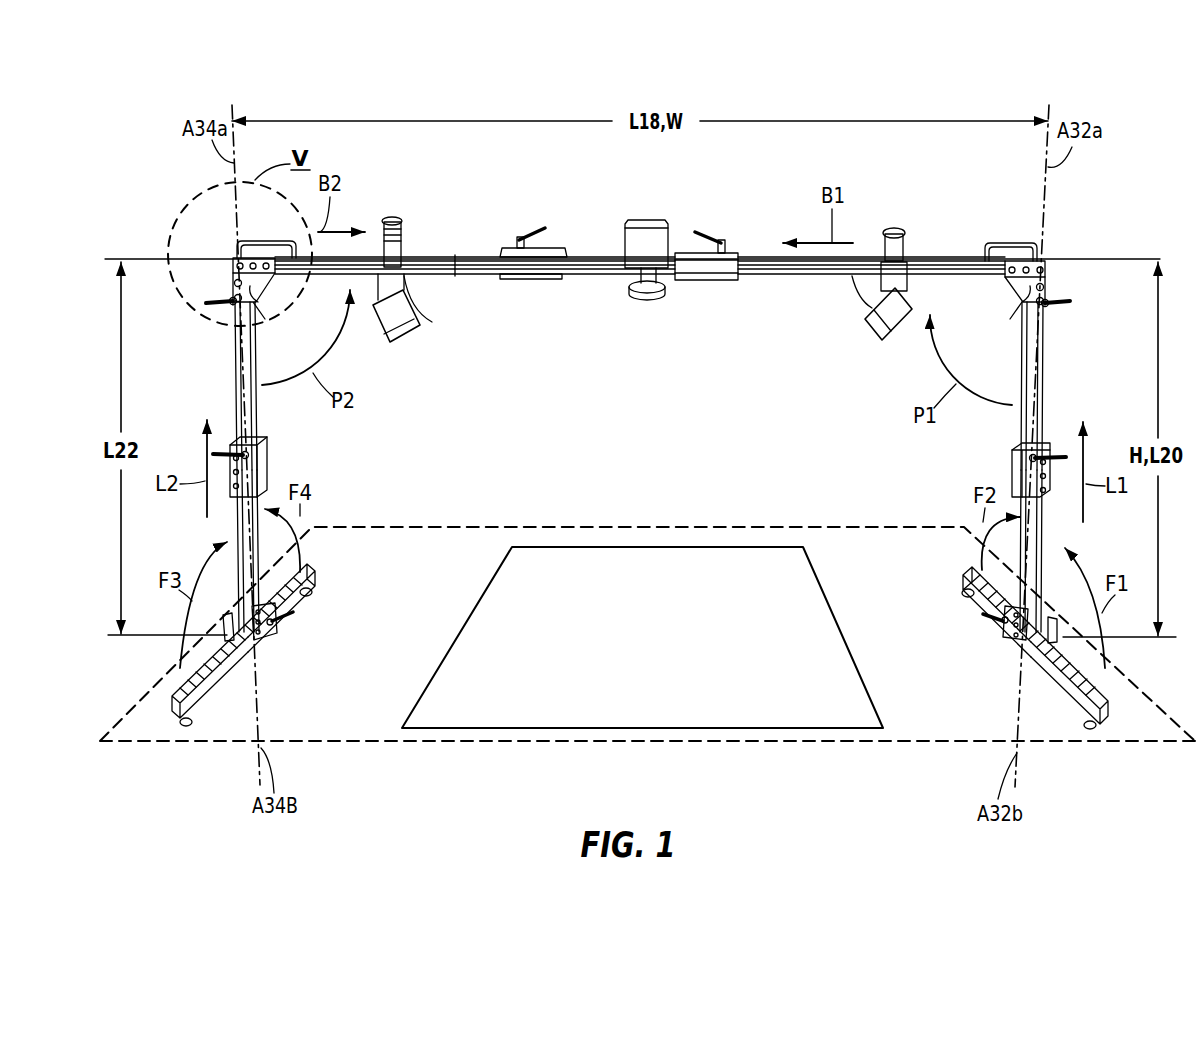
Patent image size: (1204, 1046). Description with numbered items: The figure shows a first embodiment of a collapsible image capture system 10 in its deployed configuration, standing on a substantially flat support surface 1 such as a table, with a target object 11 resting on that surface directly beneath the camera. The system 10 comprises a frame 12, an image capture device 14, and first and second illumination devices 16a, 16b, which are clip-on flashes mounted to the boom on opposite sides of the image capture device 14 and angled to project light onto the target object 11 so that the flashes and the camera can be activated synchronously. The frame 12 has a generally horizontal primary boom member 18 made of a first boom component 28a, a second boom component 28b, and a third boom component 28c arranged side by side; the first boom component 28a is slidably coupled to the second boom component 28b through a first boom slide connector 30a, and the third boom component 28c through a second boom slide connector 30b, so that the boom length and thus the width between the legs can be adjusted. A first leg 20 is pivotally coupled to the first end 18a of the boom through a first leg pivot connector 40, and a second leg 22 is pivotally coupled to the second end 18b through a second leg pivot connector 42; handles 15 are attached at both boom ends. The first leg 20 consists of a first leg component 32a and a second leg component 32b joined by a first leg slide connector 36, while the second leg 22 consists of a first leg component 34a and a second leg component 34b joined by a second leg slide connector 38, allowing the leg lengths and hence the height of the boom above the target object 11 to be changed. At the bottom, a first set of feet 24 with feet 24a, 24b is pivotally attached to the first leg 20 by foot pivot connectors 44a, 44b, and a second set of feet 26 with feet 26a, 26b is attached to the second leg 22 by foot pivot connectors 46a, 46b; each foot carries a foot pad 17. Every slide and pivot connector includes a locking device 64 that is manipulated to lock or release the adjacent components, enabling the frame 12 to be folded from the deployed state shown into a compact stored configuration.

The support surface 1 is at (870, 570).
The collapsible image capture system 10 is at (938, 76).
The target object 11 is at (664, 634).
The frame 12 is at (939, 256).
The image capture device 14 is at (636, 218).
The handles 15 is at (262, 240).
The first illumination device 16a is at (390, 219).
The second illumination device 16b is at (896, 230).
The foot pad 17 is at (310, 591).
The primary boom member 18 is at (759, 255).
The first end of the primary boom member 18a is at (1045, 284).
The second end of the primary boom member 18b is at (236, 258).
The first leg 20 is at (1077, 467).
The second leg 22 is at (195, 467).
The first set of feet 24 is at (1013, 677).
The first foot of the first set of feet 24a is at (1067, 695).
The second foot of the first set of feet 24b is at (979, 608).
The second set of feet 26 is at (266, 673).
The first foot of the second set of feet 26a is at (214, 690).
The second foot of the second set of feet 26b is at (303, 602).
The first boom component 28a is at (810, 278).
The second boom component 28b is at (575, 278).
The third boom component 28c is at (443, 276).
The first boom slide connector 30a is at (710, 282).
The second boom slide connector 30b is at (555, 248).
The first leg component of the first leg 32a is at (1040, 395).
The second leg component of the first leg 32b is at (1040, 512).
The first leg component of the second leg 34a is at (247, 392).
The second leg component of the second leg 34b is at (243, 510).
The first leg slide connector 36 is at (1012, 461).
The second leg slide connector 38 is at (267, 452).
The first leg pivot connector 40 is at (1050, 282).
The second leg pivot connector 42 is at (232, 280).
The first foot pivot connector of the first set 44a is at (1047, 620).
The second foot pivot connector of the first set 44b is at (1010, 629).
The first foot pivot connector of the second set 46a is at (233, 618).
The second foot pivot connector of the second set 46b is at (274, 627).
The locking device 64 is at (205, 302).